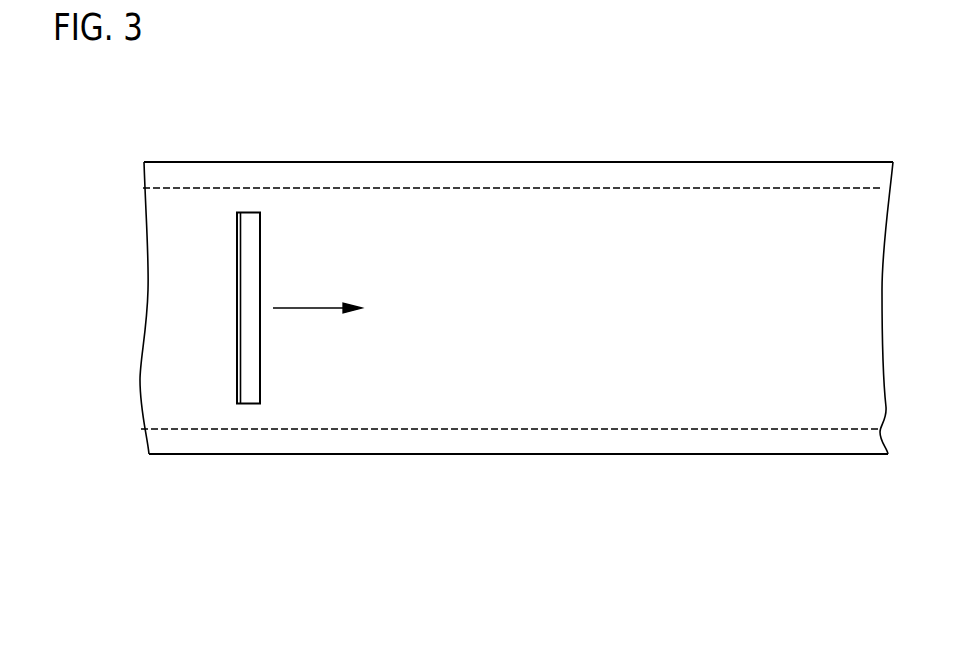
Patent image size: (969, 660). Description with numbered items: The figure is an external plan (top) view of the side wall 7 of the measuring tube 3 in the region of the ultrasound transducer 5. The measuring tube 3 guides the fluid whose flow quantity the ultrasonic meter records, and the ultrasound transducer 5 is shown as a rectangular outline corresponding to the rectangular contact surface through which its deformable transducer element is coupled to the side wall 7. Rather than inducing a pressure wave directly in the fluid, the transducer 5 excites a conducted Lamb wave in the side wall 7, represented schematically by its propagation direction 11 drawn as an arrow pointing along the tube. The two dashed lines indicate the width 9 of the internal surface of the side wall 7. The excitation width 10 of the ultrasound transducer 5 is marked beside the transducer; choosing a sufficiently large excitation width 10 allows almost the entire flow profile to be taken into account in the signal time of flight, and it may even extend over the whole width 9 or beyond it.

The measuring tube 3 is at (610, 475).
The first ultrasound transducer 5 is at (246, 212).
The side wall 7 is at (475, 398).
The width of the internal surface 9 is at (143, 187).
The excitation width 10 is at (236, 213).
The propagation direction 11 is at (307, 308).